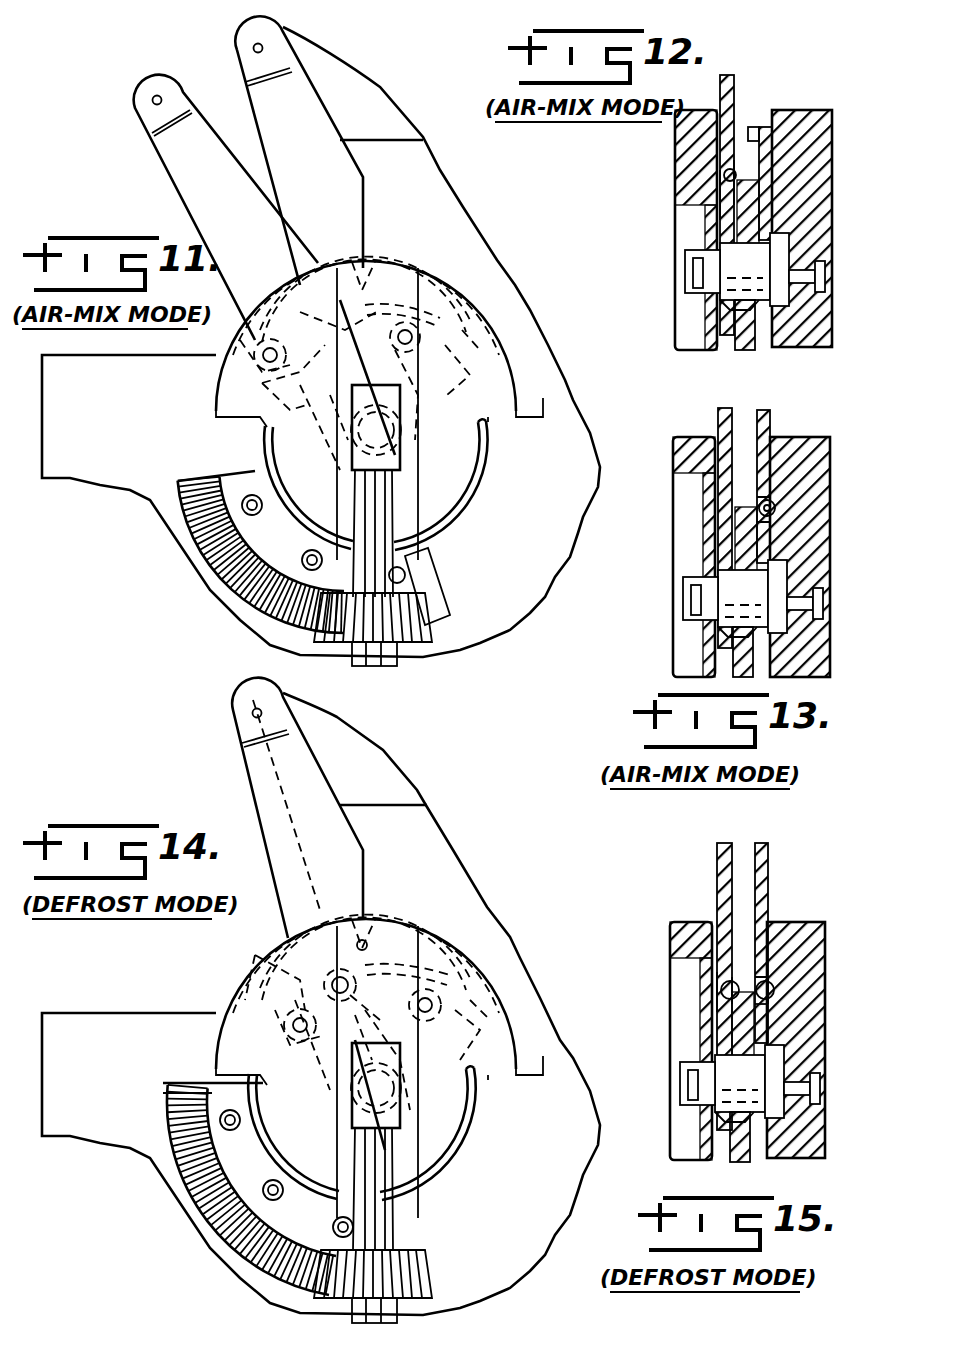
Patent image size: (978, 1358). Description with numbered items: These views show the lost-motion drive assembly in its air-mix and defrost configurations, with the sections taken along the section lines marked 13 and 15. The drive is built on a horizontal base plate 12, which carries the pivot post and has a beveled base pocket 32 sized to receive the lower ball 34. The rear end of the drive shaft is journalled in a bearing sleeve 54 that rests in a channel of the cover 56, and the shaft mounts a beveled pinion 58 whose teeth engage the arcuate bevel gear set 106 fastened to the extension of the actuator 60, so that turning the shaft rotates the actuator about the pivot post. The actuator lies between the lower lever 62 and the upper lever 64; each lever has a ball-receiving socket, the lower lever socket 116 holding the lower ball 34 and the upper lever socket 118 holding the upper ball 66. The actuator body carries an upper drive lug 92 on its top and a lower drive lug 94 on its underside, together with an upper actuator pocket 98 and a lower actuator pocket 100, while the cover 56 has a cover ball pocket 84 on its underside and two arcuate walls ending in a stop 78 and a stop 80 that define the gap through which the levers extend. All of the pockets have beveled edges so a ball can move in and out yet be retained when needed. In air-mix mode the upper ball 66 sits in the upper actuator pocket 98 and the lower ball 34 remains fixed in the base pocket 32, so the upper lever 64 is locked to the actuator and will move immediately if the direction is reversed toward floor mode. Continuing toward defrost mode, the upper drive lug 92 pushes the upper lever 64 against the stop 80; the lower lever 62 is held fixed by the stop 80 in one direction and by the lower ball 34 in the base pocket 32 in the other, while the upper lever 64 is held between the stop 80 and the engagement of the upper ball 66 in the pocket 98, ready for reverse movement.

In FIG. 11, the base plate 12 is at (466, 210).
In FIG. 12, the base plate 12 is at (822, 218).
In FIG. 13, the base plate 12 is at (820, 536).
In FIG. 14, the base plate 12 is at (453, 853).
In FIG. 15, the base plate 12 is at (807, 1021).
In FIG. 11, the base pocket 32 is at (400, 272).
In FIG. 13, the base pocket 32 is at (819, 515).
In FIG. 14, the base pocket 32 is at (370, 943).
In FIG. 15, the base pocket 32 is at (810, 1005).
In FIG. 11, the lower ball 34 is at (426, 395).
In FIG. 13, the lower ball 34 is at (816, 528).
In FIG. 15, the lower ball 34 is at (810, 981).
In FIG. 11, the bearing sleeve 54 is at (395, 462).
In FIG. 14, the bearing sleeve 54 is at (402, 1112).
In FIG. 11, the cover 56 is at (532, 366).
In FIG. 12, the cover 56 is at (668, 230).
In FIG. 13, the cover 56 is at (675, 545).
In FIG. 14, the cover 56 is at (500, 945).
In FIG. 15, the cover 56 is at (676, 1022).
In FIG. 11, the beveled pinion 58 is at (403, 655).
In FIG. 14, the beveled pinion 58 is at (420, 1277).
In FIG. 11, the actuator 60 is at (493, 482).
In FIG. 12, the actuator 60 is at (755, 278).
In FIG. 13, the actuator 60 is at (753, 538).
In FIG. 14, the actuator 60 is at (480, 1158).
In FIG. 15, the actuator 60 is at (750, 1022).
In FIG. 11, the lower lever 62 is at (237, 48).
In FIG. 12, the lower lever 62 is at (785, 159).
In FIG. 13, the lower lever 62 is at (786, 469).
In FIG. 15, the lower lever 62 is at (785, 942).
In FIG. 11, the upper lever 64 is at (176, 152).
In FIG. 12, the upper lever 64 is at (752, 192).
In FIG. 13, the upper lever 64 is at (705, 515).
In FIG. 14, the upper lever 64 is at (255, 775).
In FIG. 15, the upper lever 64 is at (701, 986).
In FIG. 11, the upper ball 66 is at (300, 322).
In FIG. 12, the upper ball 66 is at (680, 184).
In FIG. 14, the upper ball 66 is at (370, 1027).
In FIG. 15, the upper ball 66 is at (672, 985).
In FIG. 11, the stop 78 is at (255, 348).
In FIG. 14, the stop 78 is at (240, 1005).
In FIG. 11, the stop 80 is at (366, 258).
In FIG. 14, the stop 80 is at (375, 915).
In FIG. 11, the cover ball pocket 84 is at (313, 427).
In FIG. 14, the cover ball pocket 84 is at (346, 1055).
In FIG. 11, the upper drive lug 92 is at (262, 383).
In FIG. 14, the upper drive lug 92 is at (258, 960).
In FIG. 11, the lower drive lug 94 is at (468, 353).
In FIG. 14, the lower drive lug 94 is at (475, 1035).
In FIG. 11, the upper actuator pocket 98 is at (350, 435).
In FIG. 12, the upper actuator pocket 98 is at (673, 200).
In FIG. 14, the upper actuator pocket 98 is at (330, 978).
In FIG. 15, the upper actuator pocket 98 is at (678, 997).
In FIG. 11, the lower actuator pocket 100 is at (413, 307).
In FIG. 14, the lower actuator pocket 100 is at (412, 1007).
In FIG. 11, the arcuate bevel gear set 106 is at (436, 606).
In FIG. 14, the arcuate bevel gear set 106 is at (215, 1237).
In FIG. 13, the lower lever socket 116 is at (822, 493).
In FIG. 15, the lower lever socket 116 is at (815, 962).
In FIG. 12, the upper lever socket 118 is at (675, 175).
In FIG. 15, the upper lever socket 118 is at (679, 962).
In FIG. 11, the section line 13 is at (326, 272).
In FIG. 14, the section line 15 is at (207, 693).